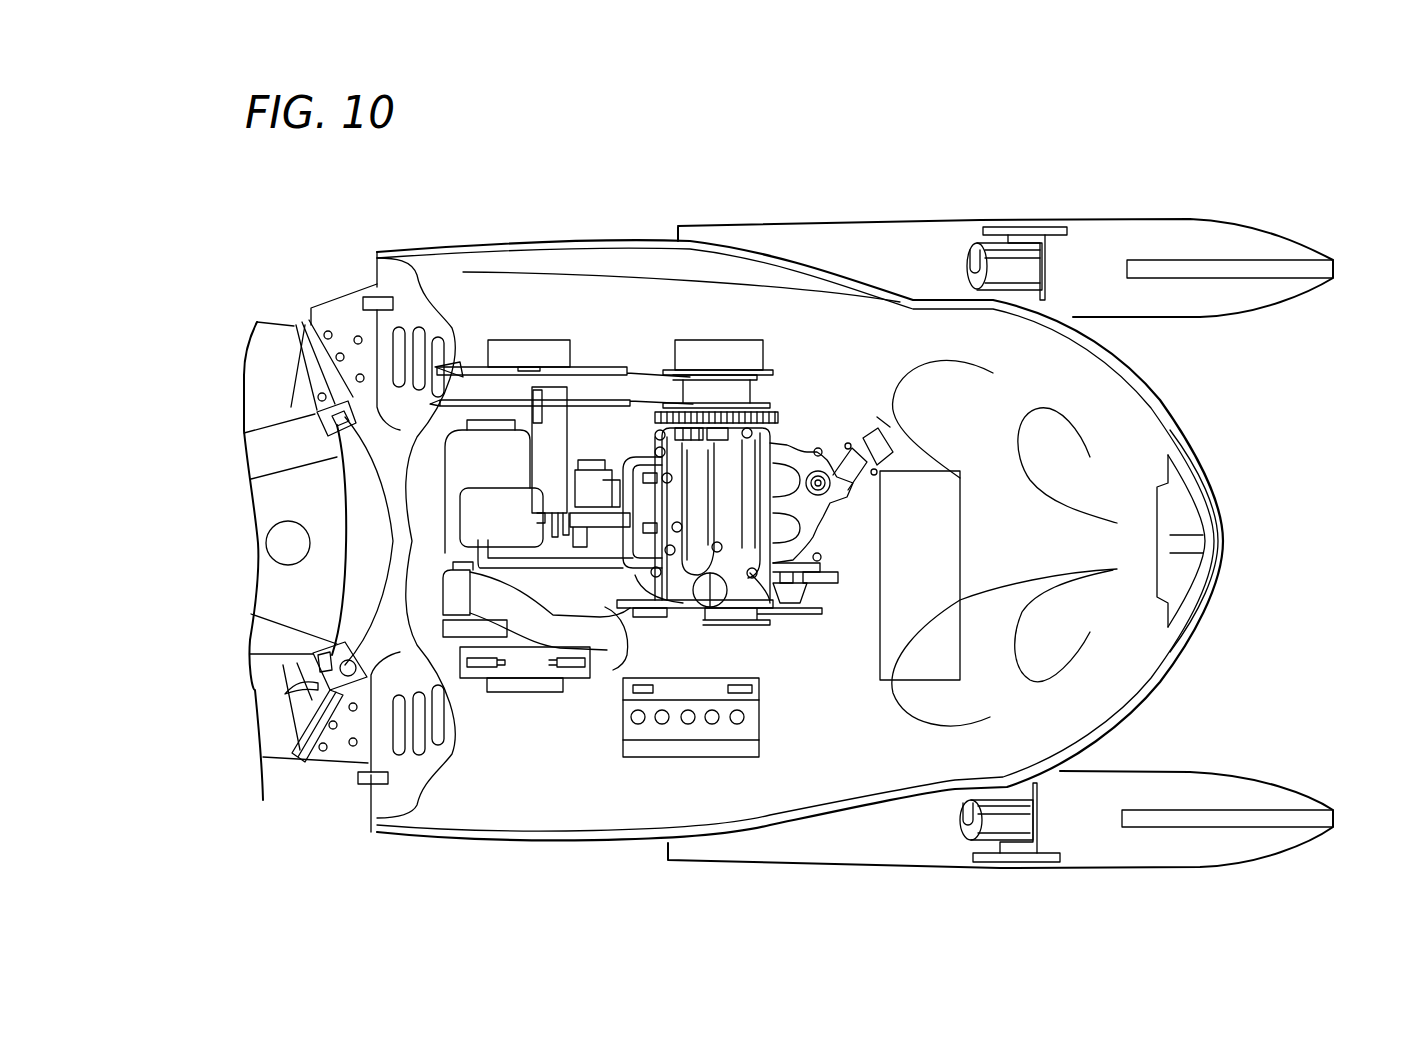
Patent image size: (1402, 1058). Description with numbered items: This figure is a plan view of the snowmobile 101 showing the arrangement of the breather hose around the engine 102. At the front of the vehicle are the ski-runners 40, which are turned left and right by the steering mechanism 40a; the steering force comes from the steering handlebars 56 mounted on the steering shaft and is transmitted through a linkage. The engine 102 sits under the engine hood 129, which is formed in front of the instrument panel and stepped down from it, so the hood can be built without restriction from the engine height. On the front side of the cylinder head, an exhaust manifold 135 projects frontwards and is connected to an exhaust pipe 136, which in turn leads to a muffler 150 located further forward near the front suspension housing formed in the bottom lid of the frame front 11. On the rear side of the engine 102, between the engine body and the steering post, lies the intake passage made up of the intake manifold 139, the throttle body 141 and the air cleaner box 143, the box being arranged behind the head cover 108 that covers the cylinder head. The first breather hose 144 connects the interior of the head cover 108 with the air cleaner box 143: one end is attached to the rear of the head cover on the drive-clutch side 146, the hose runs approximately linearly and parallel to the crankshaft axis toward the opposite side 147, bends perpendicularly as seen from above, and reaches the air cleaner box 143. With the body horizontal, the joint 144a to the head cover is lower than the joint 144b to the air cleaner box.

The frame front 11 is at (1200, 476).
The ski-runners 40 is at (1130, 240).
The steering mechanism 40a is at (957, 258).
The steering handlebars 56 is at (350, 490).
The snowmobile 101 is at (775, 208).
The engine 102 is at (769, 650).
The head cover 108 is at (697, 460).
The engine hood 129 is at (1067, 380).
The exhaust manifold 135 is at (787, 447).
The exhaust pipe 136 is at (913, 525).
The intake manifold 139 is at (550, 450).
The throttle body 141 is at (587, 456).
The air cleaner box 143 is at (520, 540).
The first breather hose 144 is at (575, 615).
The joint to head cover 144a is at (655, 455).
The joint to air cleaner box 144b is at (470, 553).
The drive-clutch side 146 is at (722, 340).
The opposite side 147 is at (685, 624).
The muffler 150 is at (916, 535).